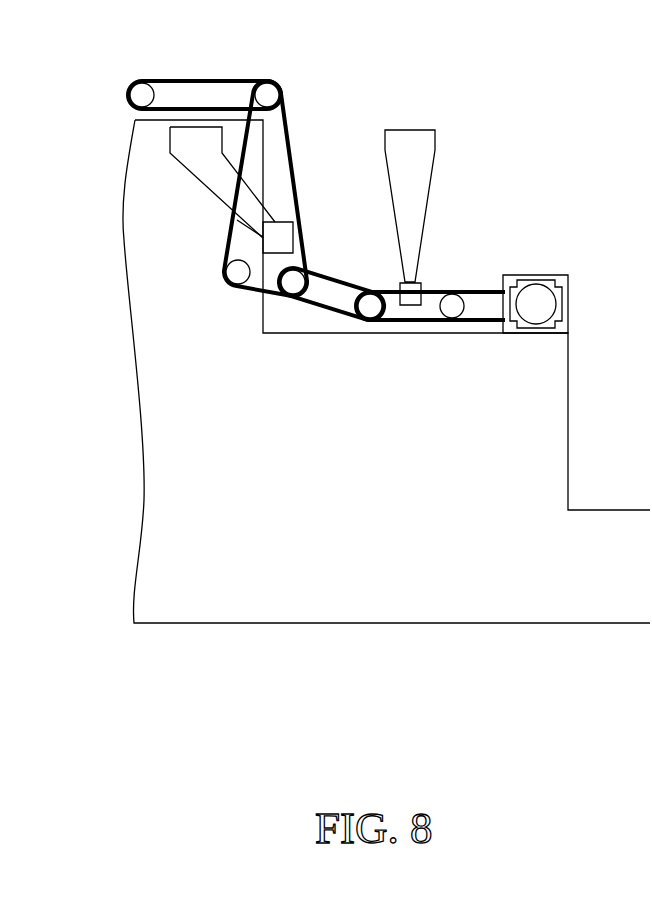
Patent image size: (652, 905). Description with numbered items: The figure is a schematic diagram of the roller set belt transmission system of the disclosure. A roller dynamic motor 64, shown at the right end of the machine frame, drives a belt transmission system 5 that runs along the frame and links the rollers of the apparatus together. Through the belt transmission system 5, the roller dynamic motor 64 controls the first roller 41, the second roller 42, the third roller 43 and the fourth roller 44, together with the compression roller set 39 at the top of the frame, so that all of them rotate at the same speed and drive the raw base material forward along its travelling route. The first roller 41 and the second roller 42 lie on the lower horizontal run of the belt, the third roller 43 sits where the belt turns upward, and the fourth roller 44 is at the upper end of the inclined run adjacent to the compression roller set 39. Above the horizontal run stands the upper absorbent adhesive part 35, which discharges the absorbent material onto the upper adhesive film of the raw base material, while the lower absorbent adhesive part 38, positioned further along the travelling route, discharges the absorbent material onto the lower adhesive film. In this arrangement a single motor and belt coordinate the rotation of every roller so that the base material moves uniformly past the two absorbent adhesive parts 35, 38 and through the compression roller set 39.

The belt transmission system 5 is at (337, 272).
The upper absorbent adhesive part 35 is at (410, 128).
The lower absorbent adhesive part 38 is at (163, 143).
The compression roller set 39 is at (143, 83).
The first roller 41 is at (452, 308).
The second roller 42 is at (370, 308).
The third roller 43 is at (293, 284).
The fourth roller 44 is at (267, 83).
The roller dynamic motor 64 is at (536, 300).